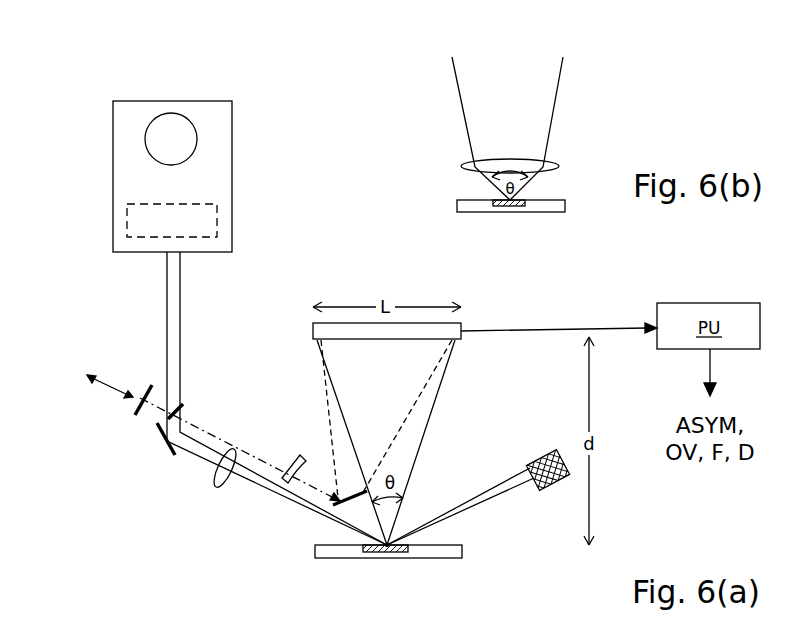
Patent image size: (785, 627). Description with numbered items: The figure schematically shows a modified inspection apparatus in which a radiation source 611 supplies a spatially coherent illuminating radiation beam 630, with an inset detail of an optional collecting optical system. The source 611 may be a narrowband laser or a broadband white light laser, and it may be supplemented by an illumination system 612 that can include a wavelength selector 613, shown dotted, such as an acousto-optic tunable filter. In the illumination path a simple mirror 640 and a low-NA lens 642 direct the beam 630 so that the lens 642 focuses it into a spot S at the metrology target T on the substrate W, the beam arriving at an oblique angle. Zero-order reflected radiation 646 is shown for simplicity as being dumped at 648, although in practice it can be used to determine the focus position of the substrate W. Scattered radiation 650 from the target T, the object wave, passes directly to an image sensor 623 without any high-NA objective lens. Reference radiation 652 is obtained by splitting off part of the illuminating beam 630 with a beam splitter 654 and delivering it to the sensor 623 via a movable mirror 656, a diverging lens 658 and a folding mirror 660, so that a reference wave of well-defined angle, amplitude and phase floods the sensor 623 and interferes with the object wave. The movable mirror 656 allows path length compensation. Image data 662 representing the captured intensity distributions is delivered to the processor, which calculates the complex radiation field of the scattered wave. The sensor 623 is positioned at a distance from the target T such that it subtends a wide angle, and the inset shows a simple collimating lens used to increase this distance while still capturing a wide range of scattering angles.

In FIG. 6A, the radiation source 611 is at (148, 155).
In FIG. 6A, the illumination system 612 is at (113, 215).
In FIG. 6A, the wavelength selector 613 is at (219, 223).
In FIG. 6A, the image sensor 623 is at (446, 342).
In FIG. 6A, the illuminating radiation beam 630 is at (167, 315).
In FIG. 6A, the mirror 640 is at (161, 431).
In FIG. 6A, the low-NA lens 642 is at (216, 486).
In FIG. 6A, the reflected radiation 646 is at (467, 508).
In FIG. 6A, the beam dump 648 is at (548, 453).
In FIG. 6B, the scattered radiation 650 is at (555, 122).
In FIG. 6A, the reference radiation 652 is at (419, 405).
In FIG. 6A, the beam splitter 654 is at (184, 409).
In FIG. 6A, the movable mirror 656 is at (144, 385).
In FIG. 6A, the diverging lens 658 is at (297, 455).
In FIG. 6A, the folding mirror 660 is at (338, 496).
In FIG. 6A, the image data 662 is at (557, 328).
In FIG. 6A, the spot S is at (377, 543).
In FIG. 6A, the substrate W is at (315, 558).
In FIG. 6A, the metrology target T is at (458, 545).